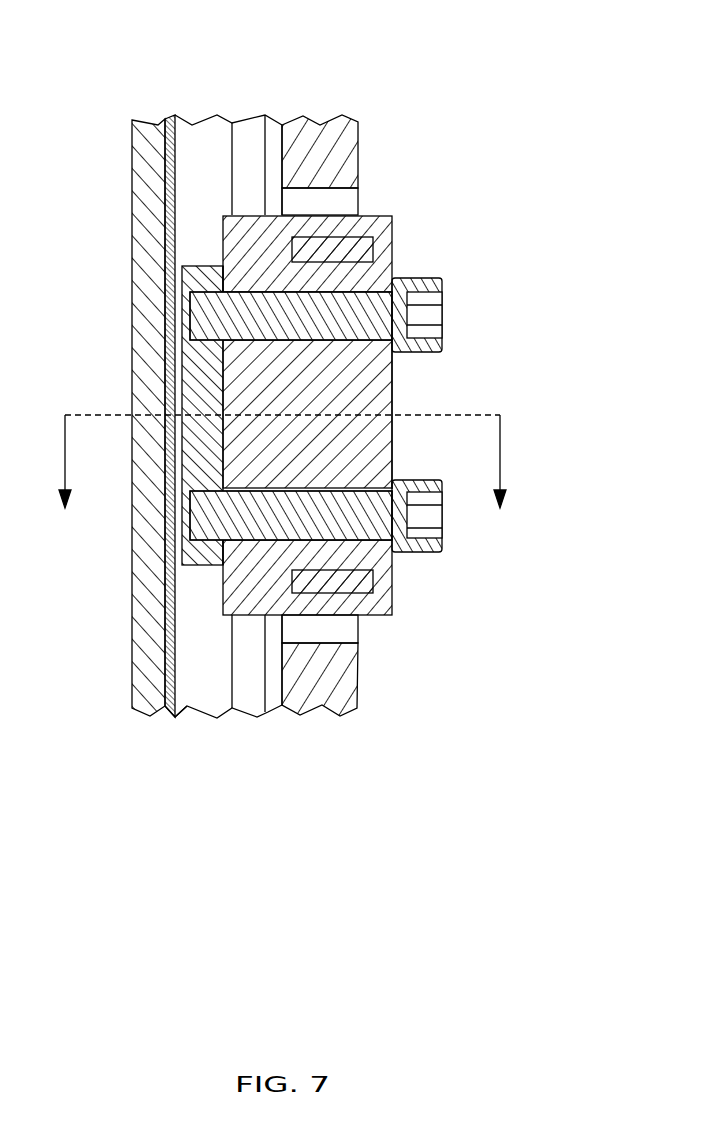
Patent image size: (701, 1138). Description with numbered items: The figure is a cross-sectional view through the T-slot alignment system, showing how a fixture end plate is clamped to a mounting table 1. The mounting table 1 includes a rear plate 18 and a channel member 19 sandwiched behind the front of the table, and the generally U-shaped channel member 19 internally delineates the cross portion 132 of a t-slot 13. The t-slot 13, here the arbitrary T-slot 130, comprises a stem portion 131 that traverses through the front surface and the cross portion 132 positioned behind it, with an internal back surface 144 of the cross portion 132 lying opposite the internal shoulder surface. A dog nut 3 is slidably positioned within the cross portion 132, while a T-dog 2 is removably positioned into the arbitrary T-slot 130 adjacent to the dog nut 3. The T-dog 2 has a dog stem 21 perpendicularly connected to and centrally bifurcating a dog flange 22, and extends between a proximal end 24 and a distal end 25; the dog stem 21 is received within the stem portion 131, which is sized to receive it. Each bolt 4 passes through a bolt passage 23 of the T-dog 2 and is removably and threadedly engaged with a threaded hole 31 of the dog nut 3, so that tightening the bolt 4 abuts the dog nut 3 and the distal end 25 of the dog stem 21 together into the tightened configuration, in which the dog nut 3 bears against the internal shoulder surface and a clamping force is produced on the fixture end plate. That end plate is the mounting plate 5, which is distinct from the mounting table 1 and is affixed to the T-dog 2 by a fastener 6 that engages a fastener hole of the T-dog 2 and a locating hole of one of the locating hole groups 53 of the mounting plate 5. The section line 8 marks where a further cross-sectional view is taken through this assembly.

The mounting table 1 is at (152, 104).
The T-dog 2 is at (338, 398).
The dog nut 3 is at (195, 378).
The bolt 4 is at (442, 285).
The mounting plate 5 is at (340, 152).
The fastener 6 is at (373, 246).
The section line 8 is at (283, 461).
The t-slot 13 is at (303, 382).
The arbitrary T-slot 130 is at (228, 382).
The stem portion 131 is at (250, 128).
The cross portion 132 is at (203, 128).
The rear plate 18 is at (148, 187).
The channel member 19 is at (190, 710).
The dog stem 21 is at (330, 440).
The dog flange 22 is at (392, 462).
The bolt passage 23 is at (226, 288).
The proximal end 24 is at (400, 219).
The distal end 25 is at (216, 242).
The threaded hole 31 is at (176, 308).
The locating hole group 53 is at (330, 207).
The internal back surface 144 is at (175, 655).